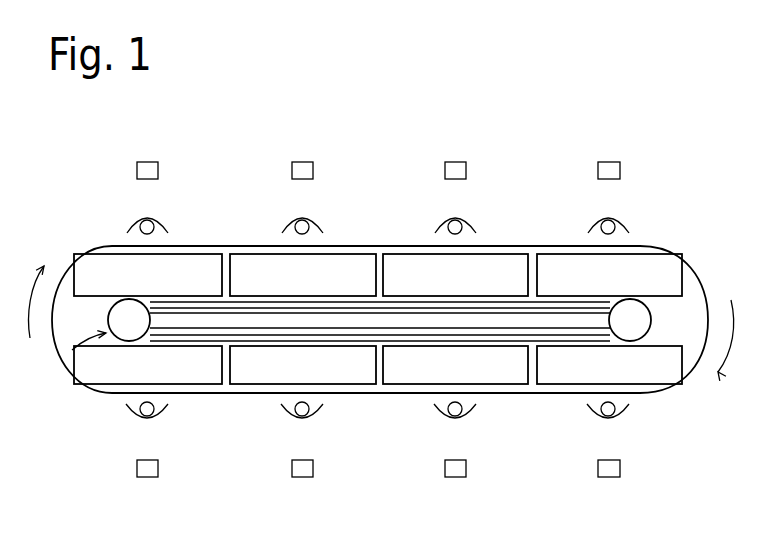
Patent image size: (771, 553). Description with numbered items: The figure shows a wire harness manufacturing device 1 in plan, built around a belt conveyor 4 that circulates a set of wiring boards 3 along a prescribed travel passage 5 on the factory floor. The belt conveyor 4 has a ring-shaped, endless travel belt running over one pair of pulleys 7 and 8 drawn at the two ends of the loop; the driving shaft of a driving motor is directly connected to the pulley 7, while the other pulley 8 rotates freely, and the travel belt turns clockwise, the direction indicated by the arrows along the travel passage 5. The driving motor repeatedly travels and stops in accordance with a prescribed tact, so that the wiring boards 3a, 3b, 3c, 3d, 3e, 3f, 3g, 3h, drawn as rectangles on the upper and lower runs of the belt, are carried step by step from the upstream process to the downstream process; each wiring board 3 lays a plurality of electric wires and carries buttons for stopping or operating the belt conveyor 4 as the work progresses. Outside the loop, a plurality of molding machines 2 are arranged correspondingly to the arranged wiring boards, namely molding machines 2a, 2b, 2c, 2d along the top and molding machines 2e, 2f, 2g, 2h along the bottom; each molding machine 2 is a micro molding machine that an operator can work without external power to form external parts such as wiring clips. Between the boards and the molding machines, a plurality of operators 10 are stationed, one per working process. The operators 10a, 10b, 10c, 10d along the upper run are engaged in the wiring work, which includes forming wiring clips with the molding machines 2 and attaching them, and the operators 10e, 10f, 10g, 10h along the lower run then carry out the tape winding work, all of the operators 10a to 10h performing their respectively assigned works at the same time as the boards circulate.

The wire harness manufacturing device 1 is at (629, 90).
The molding machine 2 is at (623, 172).
The molding machine 2a is at (148, 162).
The molding machine 2b is at (303, 162).
The molding machine 2c is at (455, 162).
The molding machine 2d is at (607, 162).
The molding machine 2e is at (608, 478).
The molding machine 2f is at (453, 478).
The molding machine 2g is at (302, 478).
The molding machine 2h is at (147, 478).
The wiring board 3 is at (668, 270).
The wiring board 3a is at (85, 253).
The wiring board 3b is at (238, 252).
The wiring board 3c is at (392, 254).
The wiring board 3d is at (545, 253).
The wiring board 3e is at (562, 387).
The wiring board 3f is at (407, 387).
The wiring board 3g is at (248, 387).
The wiring board 3h is at (96, 386).
The belt conveyor 4 is at (76, 344).
The travel passage 5 is at (692, 320).
The pulley 7 is at (117, 319).
The pulley 8 is at (632, 318).
The operator 10 is at (163, 213).
The operator 10a is at (143, 221).
The operator 10b is at (298, 221).
The operator 10c is at (451, 222).
The operator 10d is at (604, 222).
The operator 10e is at (611, 419).
The operator 10f is at (457, 419).
The operator 10g is at (304, 419).
The operator 10h is at (149, 419).